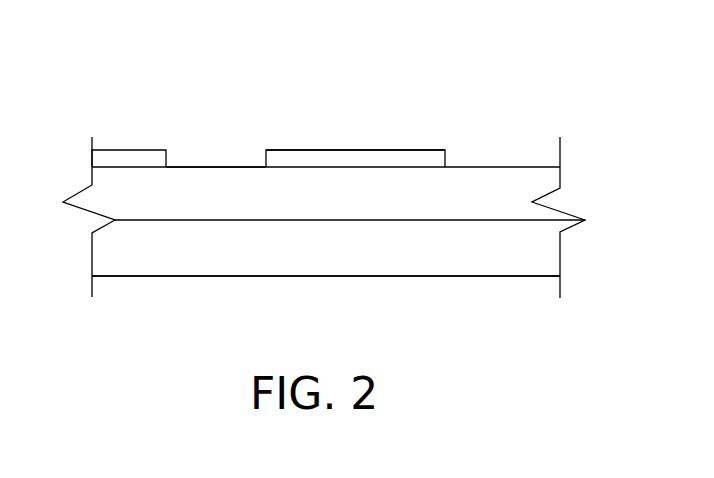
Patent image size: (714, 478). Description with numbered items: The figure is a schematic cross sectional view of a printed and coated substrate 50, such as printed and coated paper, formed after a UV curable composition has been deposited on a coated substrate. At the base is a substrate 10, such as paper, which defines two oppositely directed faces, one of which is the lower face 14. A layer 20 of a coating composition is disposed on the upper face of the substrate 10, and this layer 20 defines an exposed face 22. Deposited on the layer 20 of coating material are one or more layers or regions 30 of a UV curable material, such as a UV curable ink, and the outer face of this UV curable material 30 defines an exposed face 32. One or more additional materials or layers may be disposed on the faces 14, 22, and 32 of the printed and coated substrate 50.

The substrate 10 is at (543, 255).
The face 14 is at (223, 276).
The layer 20 is at (470, 180).
The exposed face 22 is at (230, 167).
The layer of UV curable material 30 is at (370, 158).
The exposed face 32 is at (308, 150).
The printed and coated substrate 50 is at (92, 87).